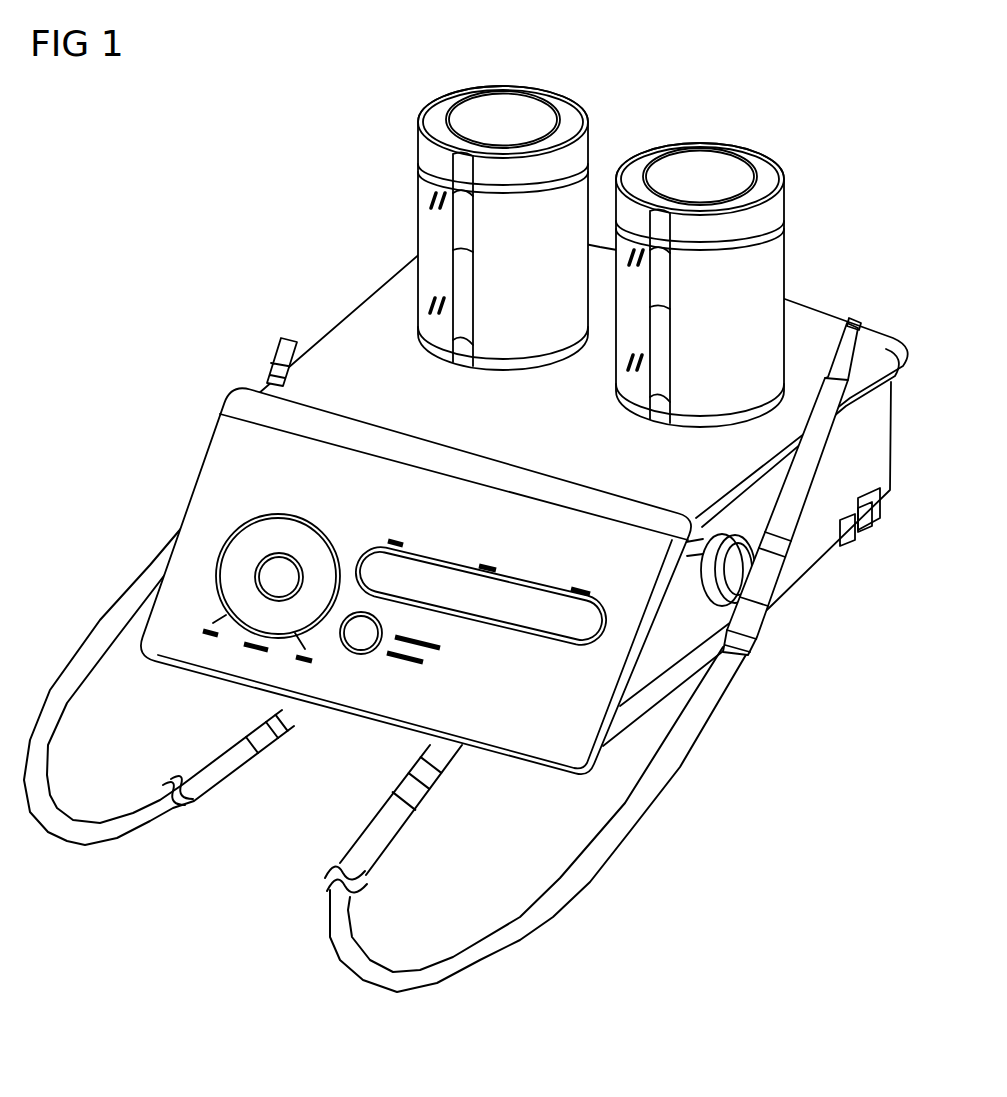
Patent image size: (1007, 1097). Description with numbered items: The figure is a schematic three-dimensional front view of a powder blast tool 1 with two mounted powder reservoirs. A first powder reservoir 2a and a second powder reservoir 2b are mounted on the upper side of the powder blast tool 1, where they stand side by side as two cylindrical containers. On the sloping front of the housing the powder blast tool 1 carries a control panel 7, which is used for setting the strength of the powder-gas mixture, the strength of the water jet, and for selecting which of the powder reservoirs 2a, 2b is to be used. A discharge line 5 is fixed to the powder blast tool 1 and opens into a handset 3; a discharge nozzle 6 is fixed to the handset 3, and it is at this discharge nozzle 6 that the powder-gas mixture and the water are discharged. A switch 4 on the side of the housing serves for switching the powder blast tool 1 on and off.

The powder blast tool 1 is at (805, 313).
The first powder reservoir 2a is at (727, 155).
The second powder reservoir 2b is at (521, 100).
The handset 3 is at (810, 462).
The switch 4 is at (870, 528).
The discharge line 5 is at (593, 863).
The discharge nozzle 6 is at (853, 320).
The control panel 7 is at (360, 633).